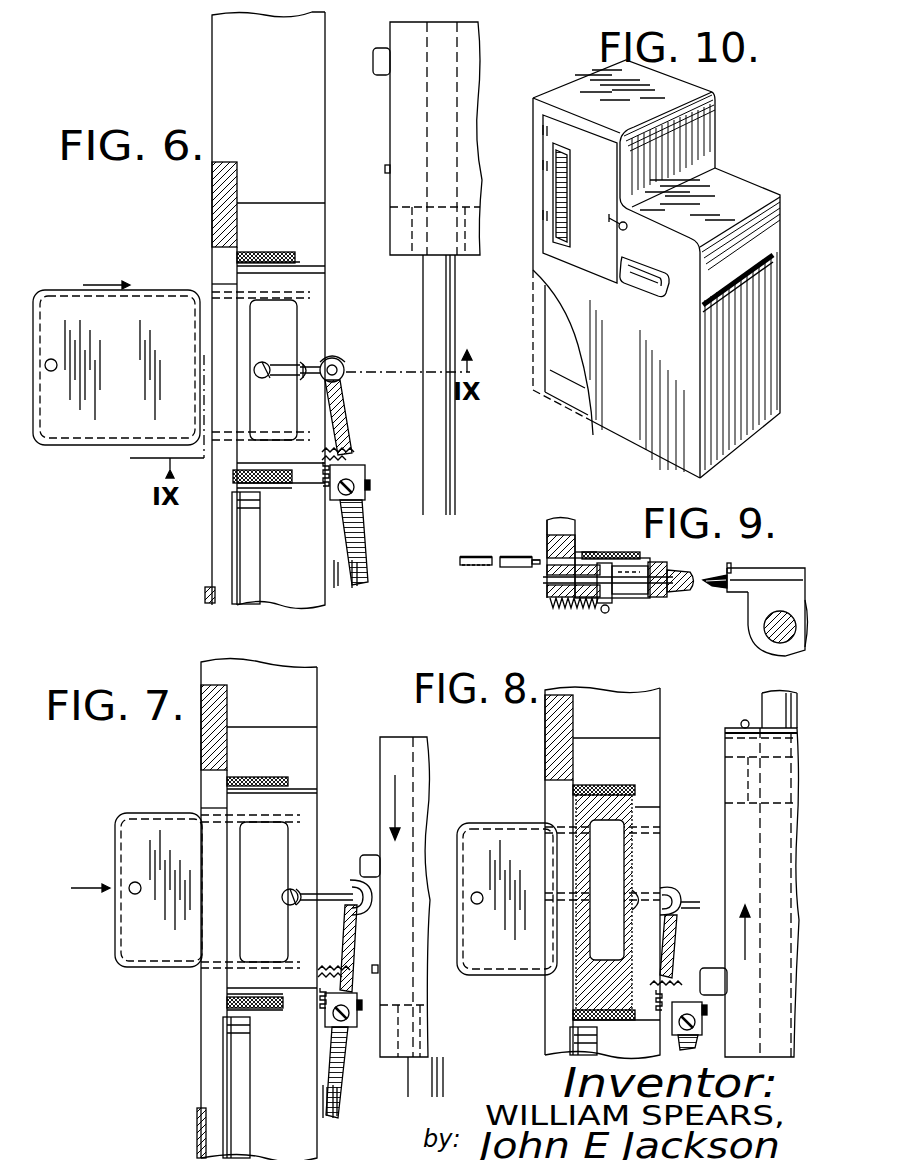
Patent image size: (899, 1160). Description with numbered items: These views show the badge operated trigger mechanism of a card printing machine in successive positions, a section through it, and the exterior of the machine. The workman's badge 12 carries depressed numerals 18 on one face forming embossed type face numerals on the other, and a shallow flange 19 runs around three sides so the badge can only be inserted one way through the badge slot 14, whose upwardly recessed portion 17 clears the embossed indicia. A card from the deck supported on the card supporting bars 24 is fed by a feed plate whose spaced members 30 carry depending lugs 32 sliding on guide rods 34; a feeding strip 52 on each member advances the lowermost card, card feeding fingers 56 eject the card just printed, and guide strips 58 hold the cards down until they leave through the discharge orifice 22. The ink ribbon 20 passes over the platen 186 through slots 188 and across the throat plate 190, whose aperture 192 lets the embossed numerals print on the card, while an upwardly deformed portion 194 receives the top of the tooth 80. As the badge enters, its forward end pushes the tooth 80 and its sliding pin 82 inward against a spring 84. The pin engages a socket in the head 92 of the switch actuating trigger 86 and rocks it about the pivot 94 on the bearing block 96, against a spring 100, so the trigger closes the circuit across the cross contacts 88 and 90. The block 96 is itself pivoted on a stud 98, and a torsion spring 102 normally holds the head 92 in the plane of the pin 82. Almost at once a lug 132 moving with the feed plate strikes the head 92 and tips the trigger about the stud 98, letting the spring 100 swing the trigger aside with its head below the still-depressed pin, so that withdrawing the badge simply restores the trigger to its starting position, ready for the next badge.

In FIG. 6, the badge 12 is at (72, 425).
In FIG. 9, the badge 12 is at (468, 557).
In FIG. 7, the badge 12 is at (120, 822).
In FIG. 8, the badge 12 is at (490, 840).
In FIG. 10, the badge slot 14 is at (635, 282).
In FIG. 9, the badge slot 14 is at (547, 566).
In FIG. 9, the upwardly recessed portion 17 is at (560, 540).
In FIG. 6, the numerals 18 is at (172, 395).
In FIG. 9, the numerals 18 is at (513, 557).
In FIG. 7, the numerals 18 is at (255, 855).
In FIG. 8, the numerals 18 is at (627, 861).
In FIG. 6, the flange 19 is at (70, 290).
In FIG. 9, the flange 19 is at (478, 568).
In FIG. 7, the flange 19 is at (115, 930).
In FIG. 8, the flange 19 is at (497, 968).
In FIG. 6, the ink ribbon 20 is at (262, 256).
In FIG. 9, the ink ribbon 20 is at (600, 552).
In FIG. 7, the ink ribbon 20 is at (258, 778).
In FIG. 8, the ink ribbon 20 is at (582, 790).
In FIG. 10, the discharge orifice 22 is at (728, 282).
In FIG. 6, the card supporting bars 24 is at (216, 36).
In FIG. 9, the card supporting bars 24 is at (590, 602).
In FIG. 7, the card supporting bars 24 is at (255, 668).
In FIG. 8, the card supporting bars 24 is at (603, 693).
In FIG. 6, the spaced members 30 is at (410, 97).
In FIG. 9, the spaced members 30 is at (752, 572).
In FIG. 7, the spaced members 30 is at (428, 748).
In FIG. 8, the spaced members 30 is at (726, 752).
In FIG. 9, the depending lugs 32 is at (752, 622).
In FIG. 6, the guide rods 34 is at (450, 285).
In FIG. 9, the guide rods 34 is at (780, 644).
In FIG. 7, the guide rods 34 is at (440, 1072).
In FIG. 8, the guide rods 34 is at (778, 700).
In FIG. 8, the feeding strip 52 is at (740, 725).
In FIG. 6, the card feeding fingers 56 is at (386, 168).
In FIG. 9, the card feeding fingers 56 is at (731, 565).
In FIG. 7, the card feeding fingers 56 is at (378, 968).
In FIG. 6, the guide strips 58 is at (248, 595).
In FIG. 7, the guide strips 58 is at (235, 1090).
In FIG. 8, the guide strips 58 is at (575, 1045).
In FIG. 6, the tooth 80 is at (264, 366).
In FIG. 9, the tooth 80 is at (606, 563).
In FIG. 7, the tooth 80 is at (290, 897).
In FIG. 6, the sliding pin 82 is at (292, 376).
In FIG. 9, the sliding pin 82 is at (630, 590).
In FIG. 7, the sliding pin 82 is at (325, 893).
In FIG. 8, the sliding pin 82 is at (690, 903).
In FIG. 9, the spring 84 is at (572, 606).
In FIG. 6, the switch actuating trigger 86 is at (348, 410).
In FIG. 7, the switch actuating trigger 86 is at (355, 930).
In FIG. 8, the switch actuating trigger 86 is at (680, 932).
In FIG. 6, the cross contact 88 is at (337, 590).
In FIG. 7, the cross contact 88 is at (322, 1118).
In FIG. 6, the cross contact 90 is at (356, 590).
In FIG. 7, the cross contact 90 is at (334, 1118).
In FIG. 6, the head 92 is at (343, 362).
In FIG. 9, the head 92 is at (680, 592).
In FIG. 7, the head 92 is at (372, 897).
In FIG. 8, the head 92 is at (674, 888).
In FIG. 6, the pivot 94 is at (358, 500).
In FIG. 7, the pivot 94 is at (345, 1020).
In FIG. 8, the pivot 94 is at (702, 1025).
In FIG. 6, the bearing block 96 is at (350, 476).
In FIG. 7, the bearing block 96 is at (336, 1006).
In FIG. 8, the bearing block 96 is at (687, 1022).
In FIG. 6, the stud 98 is at (371, 485).
In FIG. 7, the stud 98 is at (360, 1010).
In FIG. 8, the stud 98 is at (708, 1009).
In FIG. 6, the spring 100 is at (350, 448).
In FIG. 7, the spring 100 is at (322, 966).
In FIG. 8, the spring 100 is at (678, 976).
In FIG. 6, the torsion spring 102 is at (325, 470).
In FIG. 7, the torsion spring 102 is at (322, 992).
In FIG. 8, the torsion spring 102 is at (662, 1003).
In FIG. 6, the lug 132 is at (383, 53).
In FIG. 9, the lug 132 is at (718, 586).
In FIG. 7, the lug 132 is at (375, 862).
In FIG. 8, the lug 132 is at (715, 980).
In FIG. 6, the platen 186 is at (318, 296).
In FIG. 9, the platen 186 is at (612, 578).
In FIG. 7, the platen 186 is at (300, 800).
In FIG. 8, the platen 186 is at (648, 813).
In FIG. 6, the slots 188 is at (300, 266).
In FIG. 7, the slots 188 is at (265, 777).
In FIG. 8, the slots 188 is at (640, 790).
In FIG. 6, the throat plate 190 is at (240, 318).
In FIG. 9, the throat plate 190 is at (582, 552).
In FIG. 7, the throat plate 190 is at (240, 850).
In FIG. 6, the aperture 192 is at (297, 320).
In FIG. 7, the aperture 192 is at (290, 833).
In FIG. 6, the upwardly deformed portion 194 is at (305, 378).
In FIG. 9, the upwardly deformed portion 194 is at (650, 562).
In FIG. 7, the upwardly deformed portion 194 is at (295, 892).
In FIG. 8, the upwardly deformed portion 194 is at (640, 895).